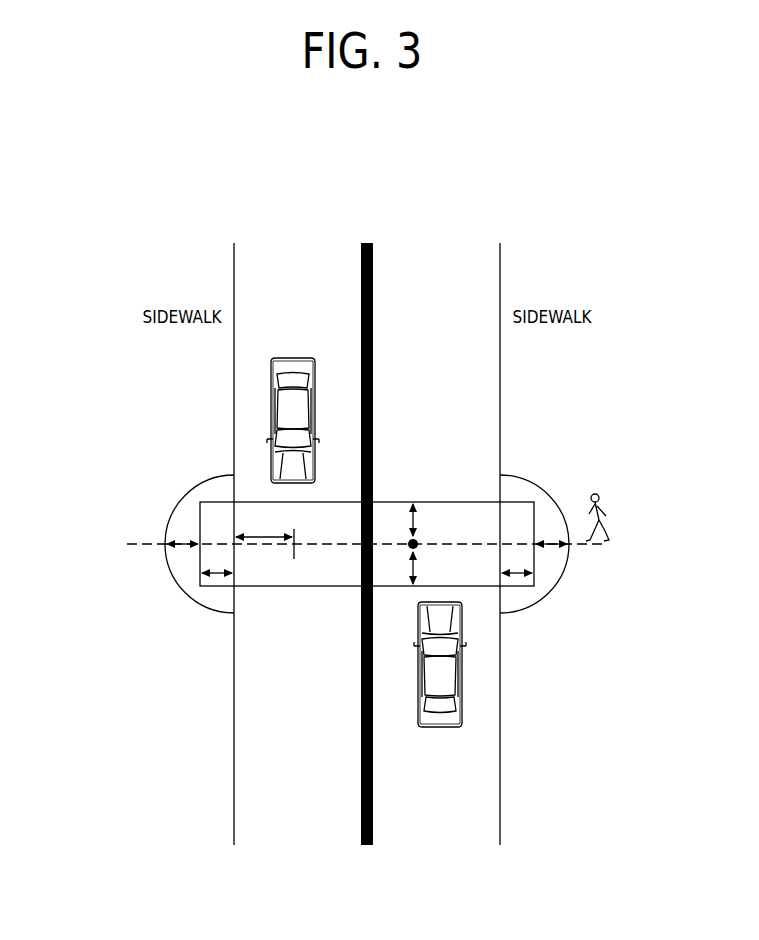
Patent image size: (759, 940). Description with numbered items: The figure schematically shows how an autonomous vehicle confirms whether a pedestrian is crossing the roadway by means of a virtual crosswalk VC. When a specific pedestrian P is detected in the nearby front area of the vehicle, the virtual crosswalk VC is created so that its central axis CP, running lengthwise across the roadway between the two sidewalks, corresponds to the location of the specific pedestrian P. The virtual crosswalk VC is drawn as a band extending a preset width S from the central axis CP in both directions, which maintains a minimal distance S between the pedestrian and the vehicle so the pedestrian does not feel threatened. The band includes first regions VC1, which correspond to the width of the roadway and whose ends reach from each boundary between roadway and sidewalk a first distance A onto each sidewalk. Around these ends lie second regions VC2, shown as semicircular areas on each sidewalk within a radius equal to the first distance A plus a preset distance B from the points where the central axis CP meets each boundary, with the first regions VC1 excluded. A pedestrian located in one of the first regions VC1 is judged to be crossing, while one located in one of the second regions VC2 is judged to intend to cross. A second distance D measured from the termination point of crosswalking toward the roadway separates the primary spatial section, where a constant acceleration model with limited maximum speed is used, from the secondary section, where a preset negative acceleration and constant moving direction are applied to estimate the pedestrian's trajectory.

The virtual crosswalk VC is at (77, 482).
The first regions VC1 is at (200, 512).
The second regions VC2 is at (165, 533).
The second distance D is at (264, 533).
The central axis CP is at (447, 540).
The preset width S is at (402, 544).
The first distance A is at (217, 574).
The preset distance B is at (183, 546).
The specific pedestrian P is at (598, 490).